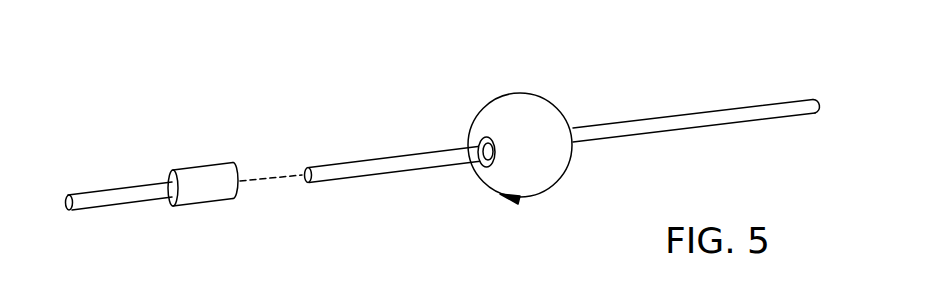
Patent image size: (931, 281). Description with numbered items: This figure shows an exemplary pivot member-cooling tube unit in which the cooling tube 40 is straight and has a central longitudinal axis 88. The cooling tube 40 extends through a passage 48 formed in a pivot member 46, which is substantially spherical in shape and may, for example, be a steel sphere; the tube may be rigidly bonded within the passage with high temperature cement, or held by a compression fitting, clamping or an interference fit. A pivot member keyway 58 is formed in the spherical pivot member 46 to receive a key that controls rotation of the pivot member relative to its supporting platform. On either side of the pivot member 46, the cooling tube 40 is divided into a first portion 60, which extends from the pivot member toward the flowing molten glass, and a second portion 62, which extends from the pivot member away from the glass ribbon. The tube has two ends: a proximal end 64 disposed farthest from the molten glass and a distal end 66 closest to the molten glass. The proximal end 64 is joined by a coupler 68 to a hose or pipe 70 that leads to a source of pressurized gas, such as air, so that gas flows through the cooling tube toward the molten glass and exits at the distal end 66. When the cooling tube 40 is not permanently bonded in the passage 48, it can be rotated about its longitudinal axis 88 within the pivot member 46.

The cooling tube 40 is at (678, 112).
The pivot member 46 is at (523, 102).
The passage 48 is at (483, 137).
The pivot member keyway 58 is at (516, 201).
The first portion 60 is at (713, 96).
The second portion 62 is at (394, 176).
The proximal end 64 is at (312, 168).
The distal end 66 is at (813, 97).
The coupler 68 is at (208, 195).
The hose or pipe 70 is at (117, 188).
The central longitudinal axis 88 is at (273, 178).